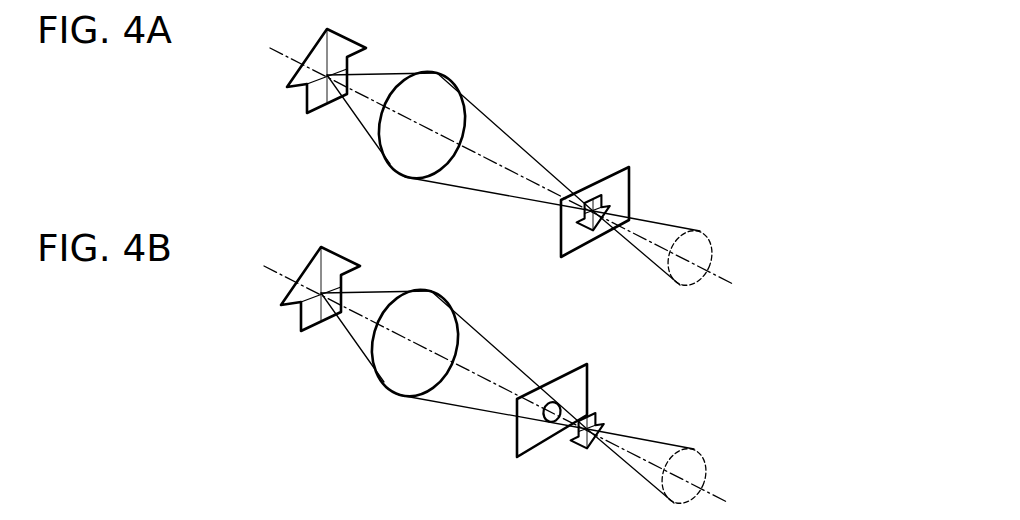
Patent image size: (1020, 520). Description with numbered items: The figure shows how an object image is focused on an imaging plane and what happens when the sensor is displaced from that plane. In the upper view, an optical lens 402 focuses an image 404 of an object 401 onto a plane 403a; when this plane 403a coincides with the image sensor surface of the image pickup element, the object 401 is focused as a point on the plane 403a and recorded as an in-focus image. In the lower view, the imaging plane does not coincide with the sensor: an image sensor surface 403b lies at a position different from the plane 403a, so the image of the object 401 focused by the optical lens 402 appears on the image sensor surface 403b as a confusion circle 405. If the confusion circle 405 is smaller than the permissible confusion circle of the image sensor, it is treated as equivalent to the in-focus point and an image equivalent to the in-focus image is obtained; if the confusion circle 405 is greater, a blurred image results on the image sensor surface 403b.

In FIG. 4A, the object 401 is at (348, 36).
In FIG. 4B, the object 401 is at (344, 253).
In FIG. 4A, the optical lens 402 is at (440, 74).
In FIG. 4B, the optical lens 402 is at (433, 292).
In FIG. 4A, the plane 403a is at (631, 182).
In FIG. 4B, the image sensor surface 403b is at (589, 371).
In FIG. 4A, the image 404 is at (592, 200).
In FIG. 4B, the image 404 is at (599, 412).
In FIG. 4B, the confusion circle 405 is at (550, 401).